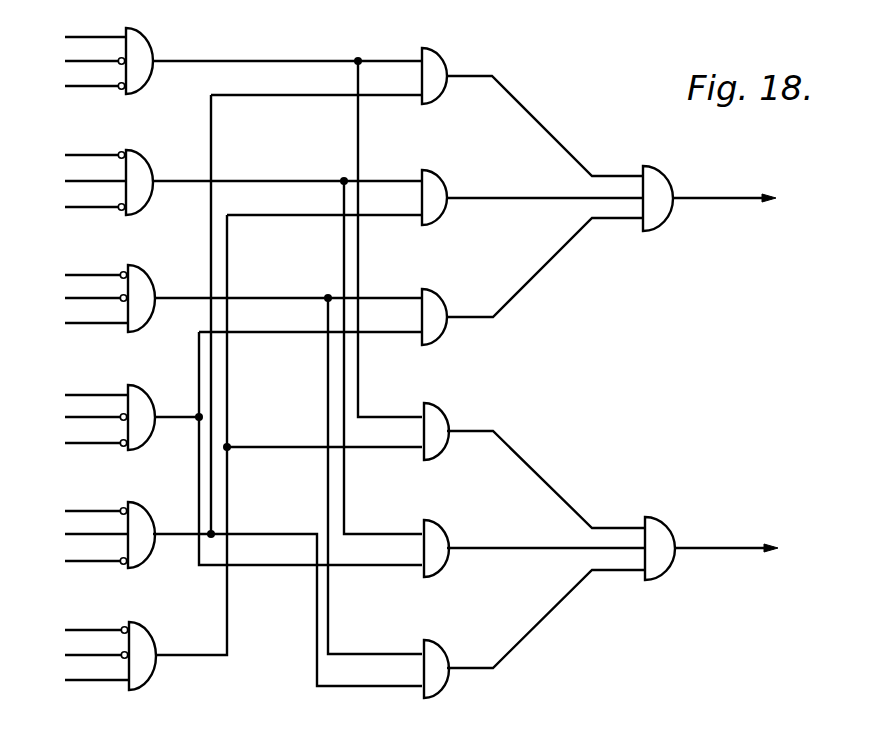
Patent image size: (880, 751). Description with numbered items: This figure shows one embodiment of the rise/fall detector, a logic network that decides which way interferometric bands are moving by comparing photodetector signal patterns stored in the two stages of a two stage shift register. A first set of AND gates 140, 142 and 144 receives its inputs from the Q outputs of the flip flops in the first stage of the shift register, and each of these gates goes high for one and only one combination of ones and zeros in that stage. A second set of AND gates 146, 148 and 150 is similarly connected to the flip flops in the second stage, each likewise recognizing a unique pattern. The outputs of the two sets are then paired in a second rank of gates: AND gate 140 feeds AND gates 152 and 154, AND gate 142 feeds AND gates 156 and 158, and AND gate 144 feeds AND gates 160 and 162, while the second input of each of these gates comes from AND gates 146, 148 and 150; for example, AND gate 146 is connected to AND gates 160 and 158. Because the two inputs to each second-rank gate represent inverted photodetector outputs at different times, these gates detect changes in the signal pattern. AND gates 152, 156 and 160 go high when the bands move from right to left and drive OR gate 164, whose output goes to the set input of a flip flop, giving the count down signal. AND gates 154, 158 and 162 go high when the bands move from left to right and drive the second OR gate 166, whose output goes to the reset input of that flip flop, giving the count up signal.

The AND gate 140 is at (149, 40).
The AND gate 142 is at (137, 152).
The AND gate 144 is at (172, 255).
The AND gate 146 is at (168, 382).
The AND gate 148 is at (170, 492).
The AND gate 150 is at (155, 635).
The AND gate 152 is at (441, 57).
The AND gate 154 is at (436, 407).
The AND gate 156 is at (437, 170).
The AND gate 158 is at (438, 522).
The AND gate 160 is at (440, 295).
The AND gate 162 is at (440, 648).
The OR gate 164 is at (668, 168).
The second OR gate 166 is at (670, 520).